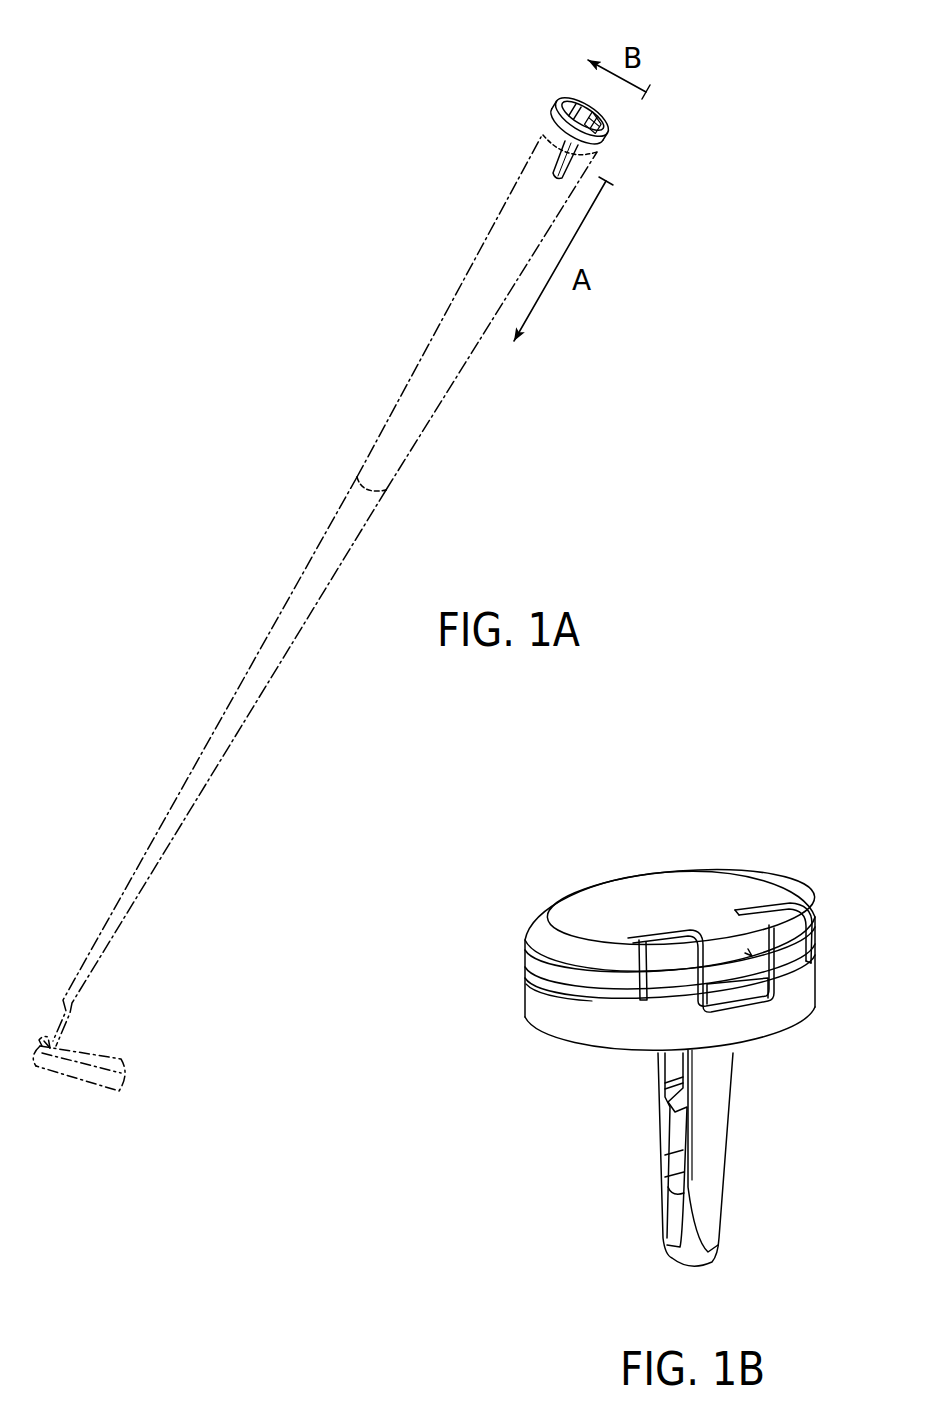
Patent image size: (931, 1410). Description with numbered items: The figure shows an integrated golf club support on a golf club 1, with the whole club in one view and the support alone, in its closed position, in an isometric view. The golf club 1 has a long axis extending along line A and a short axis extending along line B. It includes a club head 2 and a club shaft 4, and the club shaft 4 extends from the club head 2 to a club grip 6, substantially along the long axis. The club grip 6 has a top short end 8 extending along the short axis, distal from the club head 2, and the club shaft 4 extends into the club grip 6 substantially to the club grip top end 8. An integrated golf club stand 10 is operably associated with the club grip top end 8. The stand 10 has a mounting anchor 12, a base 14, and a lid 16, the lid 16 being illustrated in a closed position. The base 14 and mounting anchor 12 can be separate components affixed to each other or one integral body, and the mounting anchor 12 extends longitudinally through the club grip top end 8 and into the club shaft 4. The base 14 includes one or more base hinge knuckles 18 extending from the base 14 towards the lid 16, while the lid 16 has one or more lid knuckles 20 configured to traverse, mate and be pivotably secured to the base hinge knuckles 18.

In FIG. 1A, the golf club 1 is at (252, 521).
In FIG. 1A, the club head 2 is at (68, 1084).
In FIG. 1A, the club shaft 4 is at (243, 681).
In FIG. 1A, the club grip 6 is at (442, 305).
In FIG. 1A, the top short end 8 is at (532, 128).
In FIG. 1A, the integrated golf club stand 10 is at (562, 86).
In FIG. 1B, the integrated golf club stand 10 is at (565, 840).
In FIG. 1B, the mounting anchor 12 is at (664, 1166).
In FIG. 1B, the base 14 is at (526, 998).
In FIG. 1B, the lid 16 is at (651, 866).
In FIG. 1B, the base hinge knuckles 18 is at (670, 947).
In FIG. 1B, the lid knuckles 20 is at (745, 953).